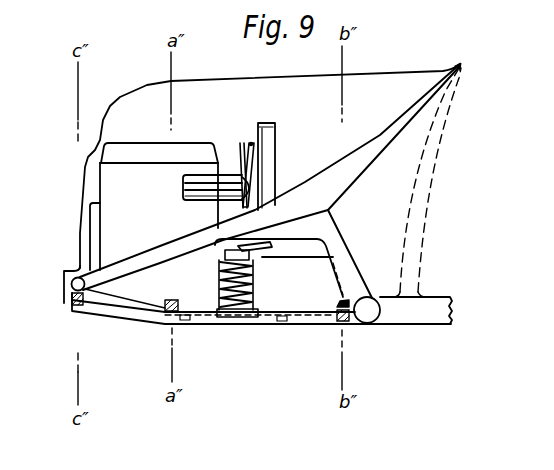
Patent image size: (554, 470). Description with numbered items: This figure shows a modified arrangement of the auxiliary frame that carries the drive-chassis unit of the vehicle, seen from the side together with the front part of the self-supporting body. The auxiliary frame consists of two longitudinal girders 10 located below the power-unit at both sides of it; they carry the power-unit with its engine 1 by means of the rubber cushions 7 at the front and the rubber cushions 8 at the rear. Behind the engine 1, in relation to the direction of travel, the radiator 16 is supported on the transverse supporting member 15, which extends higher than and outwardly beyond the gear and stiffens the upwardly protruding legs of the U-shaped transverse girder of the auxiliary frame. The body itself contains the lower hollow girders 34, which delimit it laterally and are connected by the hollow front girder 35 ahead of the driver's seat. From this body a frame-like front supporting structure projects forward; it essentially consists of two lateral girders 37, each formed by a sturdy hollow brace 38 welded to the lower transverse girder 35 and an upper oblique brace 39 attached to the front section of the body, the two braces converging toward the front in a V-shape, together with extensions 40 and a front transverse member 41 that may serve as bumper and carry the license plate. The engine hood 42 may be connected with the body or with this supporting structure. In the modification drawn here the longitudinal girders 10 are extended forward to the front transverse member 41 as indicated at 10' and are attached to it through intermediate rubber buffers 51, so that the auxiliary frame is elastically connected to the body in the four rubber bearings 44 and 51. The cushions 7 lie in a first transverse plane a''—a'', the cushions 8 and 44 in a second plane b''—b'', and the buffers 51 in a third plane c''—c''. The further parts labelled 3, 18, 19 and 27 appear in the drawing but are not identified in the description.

The engine 1 is at (103, 180).
The base frame 3 is at (305, 302).
The rubber cushions 7 is at (173, 300).
The rubber cushions 8 is at (337, 302).
The longitudinal girders 10 is at (265, 352).
The extension of longitudinal girders 10' is at (261, 330).
The transverse supporting member 15 is at (262, 254).
The radiator 16 is at (276, 136).
The link rod 18 is at (251, 142).
The guide rod 19 is at (242, 153).
The compression spring 27 is at (262, 290).
The lower hollow girders 34 is at (438, 305).
The hollow front girder 35 is at (374, 302).
The lateral girders 37 is at (293, 207).
The hollow brace 38 is at (335, 244).
The upper oblique brace 39 is at (354, 168).
The extensions 40 is at (160, 245).
The front transverse member 41 is at (72, 283).
The engine hood 42 is at (190, 80).
The rubber cushions 44 is at (342, 321).
The rubber buffers 51 is at (78, 308).